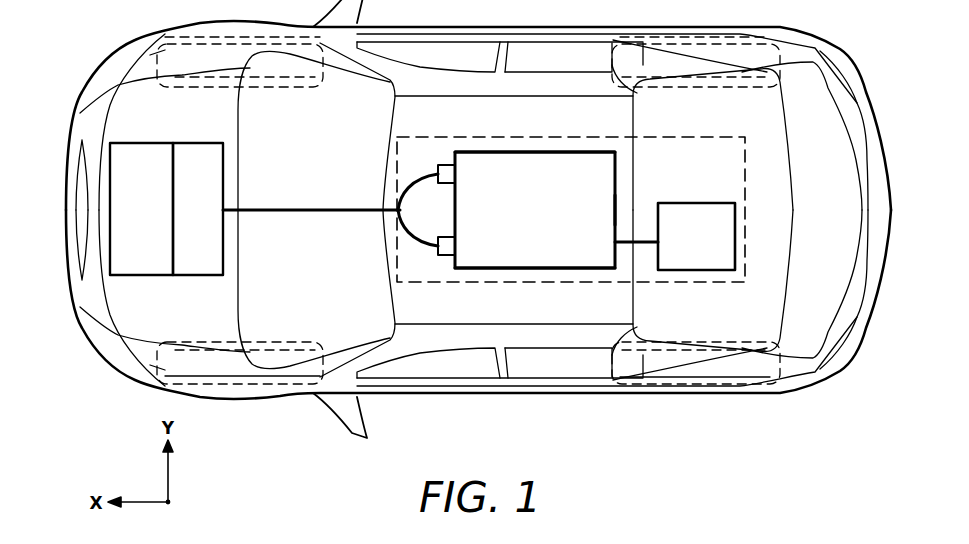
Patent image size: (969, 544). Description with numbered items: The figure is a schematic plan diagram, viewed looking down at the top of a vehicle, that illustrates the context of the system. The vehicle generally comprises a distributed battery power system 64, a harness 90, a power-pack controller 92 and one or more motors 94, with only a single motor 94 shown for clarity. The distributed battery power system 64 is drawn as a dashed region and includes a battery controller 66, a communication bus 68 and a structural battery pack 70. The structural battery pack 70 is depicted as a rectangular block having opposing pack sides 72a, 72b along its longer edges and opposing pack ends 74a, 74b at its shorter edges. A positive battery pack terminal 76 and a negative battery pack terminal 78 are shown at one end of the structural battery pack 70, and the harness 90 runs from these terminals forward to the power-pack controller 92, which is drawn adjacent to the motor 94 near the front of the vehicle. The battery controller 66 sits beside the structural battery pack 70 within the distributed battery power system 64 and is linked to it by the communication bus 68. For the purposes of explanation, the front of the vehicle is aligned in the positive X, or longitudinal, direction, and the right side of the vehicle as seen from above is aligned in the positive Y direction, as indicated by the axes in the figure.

The distributed battery power system 64 is at (675, 137).
The battery controller 66 is at (684, 253).
The communication bus 68 is at (650, 244).
The structural battery pack 70 is at (522, 235).
The pack side 72a is at (534, 151).
The pack side 72b is at (531, 269).
The pack end 74a is at (443, 257).
The pack end 74b is at (616, 210).
The positive battery pack terminal 76 is at (446, 164).
The negative battery pack terminal 78 is at (438, 258).
The harness 90 is at (337, 209).
The power-pack controller 92 is at (185, 228).
The motor 94 is at (128, 228).